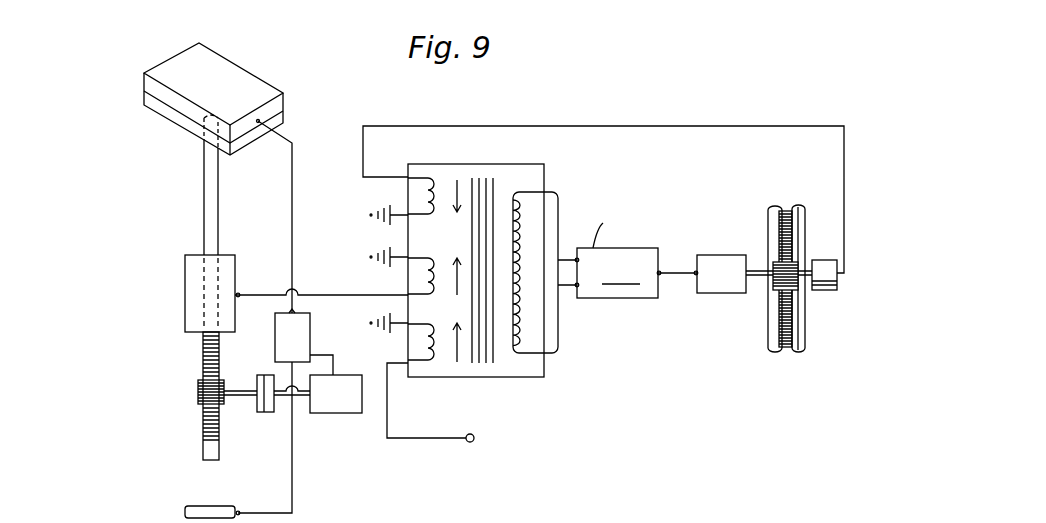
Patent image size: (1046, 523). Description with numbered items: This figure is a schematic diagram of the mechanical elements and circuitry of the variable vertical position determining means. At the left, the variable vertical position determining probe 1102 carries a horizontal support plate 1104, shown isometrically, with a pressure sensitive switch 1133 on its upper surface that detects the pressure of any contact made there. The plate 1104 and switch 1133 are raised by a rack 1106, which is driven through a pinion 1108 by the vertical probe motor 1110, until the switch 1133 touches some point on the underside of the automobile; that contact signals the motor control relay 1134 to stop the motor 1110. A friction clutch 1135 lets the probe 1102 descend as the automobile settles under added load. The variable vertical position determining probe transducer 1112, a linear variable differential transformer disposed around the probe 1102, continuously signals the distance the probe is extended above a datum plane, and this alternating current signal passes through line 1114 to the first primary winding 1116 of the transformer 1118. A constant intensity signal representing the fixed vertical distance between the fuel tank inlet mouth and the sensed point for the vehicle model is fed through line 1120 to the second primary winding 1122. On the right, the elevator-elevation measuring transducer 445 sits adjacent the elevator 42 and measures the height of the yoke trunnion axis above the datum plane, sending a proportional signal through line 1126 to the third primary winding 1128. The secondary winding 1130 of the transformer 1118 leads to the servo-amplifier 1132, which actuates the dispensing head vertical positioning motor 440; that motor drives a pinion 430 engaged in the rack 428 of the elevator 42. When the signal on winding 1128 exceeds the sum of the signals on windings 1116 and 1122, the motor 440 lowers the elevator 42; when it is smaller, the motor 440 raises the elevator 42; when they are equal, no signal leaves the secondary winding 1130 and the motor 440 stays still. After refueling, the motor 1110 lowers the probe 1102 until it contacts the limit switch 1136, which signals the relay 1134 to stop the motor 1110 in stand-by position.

The elevator 42 is at (770, 216).
The rack 428 is at (775, 330).
The pinion 430 is at (773, 288).
The dispensing head vertical positioning motor 440 is at (714, 294).
The elevator-elevation measuring transducer 445 is at (822, 291).
The variable vertical position determining probe 1102 is at (203, 197).
The horizontal support plate 1104 is at (155, 111).
The rack 1106 is at (203, 355).
The pinion 1108 is at (198, 393).
The vertical probe motor 1110 is at (334, 414).
The variable vertical position determining probe transducer 1112 is at (185, 283).
The line 1114 is at (262, 293).
The first primary winding 1116 is at (426, 278).
The transformer 1118 is at (500, 164).
The line 1120 is at (423, 438).
The second primary winding 1122 is at (426, 346).
The line 1126 is at (512, 126).
The third primary winding 1128 is at (426, 194).
The secondary winding 1130 is at (530, 305).
The servo-amplifier 1132 is at (634, 248).
The pressure sensitive switch 1133 is at (232, 62).
The motor control relay 1134 is at (312, 324).
The friction clutch 1135 is at (265, 414).
The limit switch 1136 is at (185, 509).